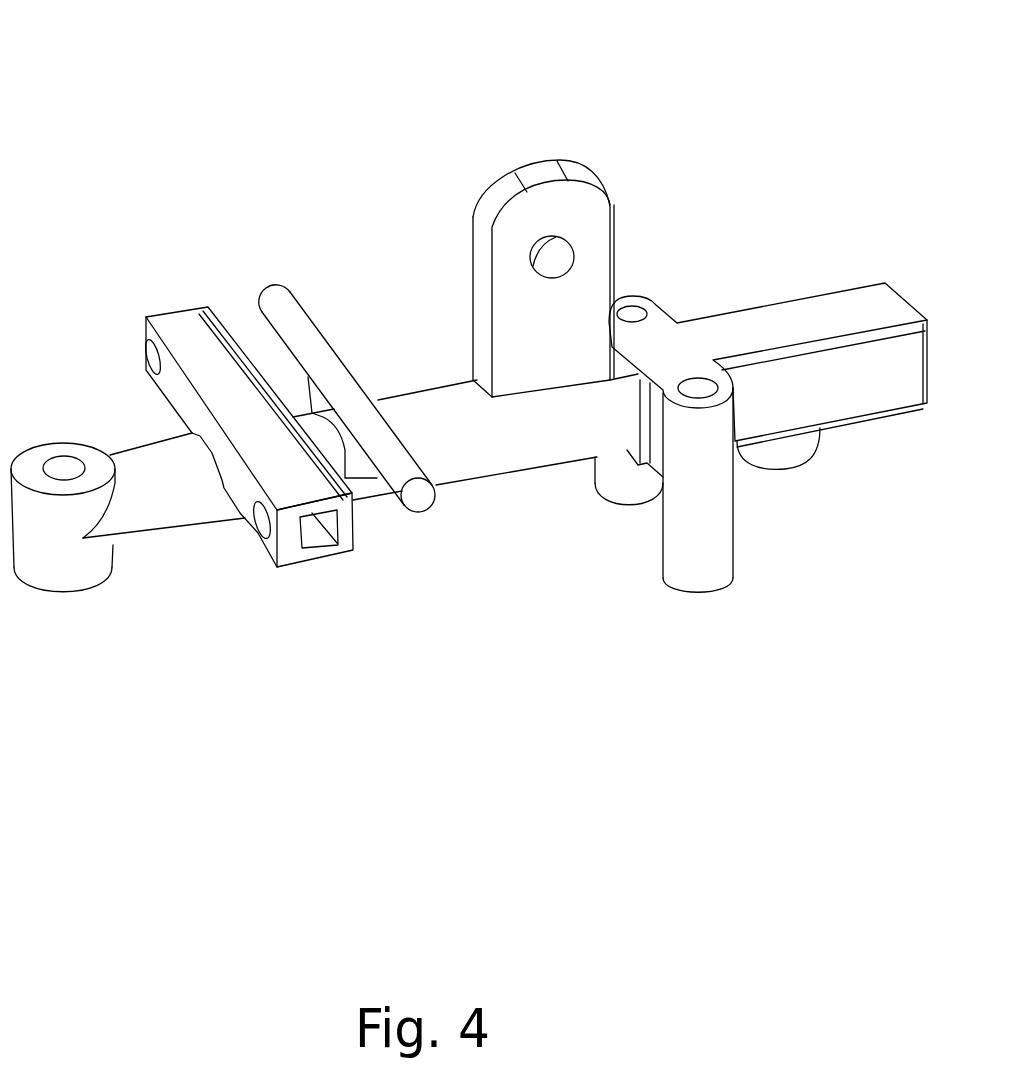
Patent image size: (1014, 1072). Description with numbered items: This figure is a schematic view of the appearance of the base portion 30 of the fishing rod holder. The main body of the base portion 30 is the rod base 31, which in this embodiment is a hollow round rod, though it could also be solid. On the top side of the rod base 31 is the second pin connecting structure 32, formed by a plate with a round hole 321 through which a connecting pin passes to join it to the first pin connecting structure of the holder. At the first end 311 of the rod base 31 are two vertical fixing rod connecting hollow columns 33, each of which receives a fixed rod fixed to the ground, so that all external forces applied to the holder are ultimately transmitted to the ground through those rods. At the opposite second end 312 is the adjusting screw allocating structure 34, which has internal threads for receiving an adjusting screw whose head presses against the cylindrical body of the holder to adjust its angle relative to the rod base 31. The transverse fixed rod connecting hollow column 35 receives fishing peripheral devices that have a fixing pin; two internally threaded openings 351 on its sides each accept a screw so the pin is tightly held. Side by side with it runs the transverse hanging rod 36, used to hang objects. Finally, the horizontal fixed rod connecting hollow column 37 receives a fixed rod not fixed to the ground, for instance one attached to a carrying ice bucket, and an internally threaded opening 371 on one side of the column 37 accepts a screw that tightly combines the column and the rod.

The base portion 30 is at (538, 119).
The rod base 31 is at (527, 460).
The first end 311 is at (617, 380).
The second end 312 is at (125, 540).
The second pin connecting structure 32 is at (577, 213).
The round hole 321 is at (555, 255).
The vertical fixing rod connecting hollow column 33 is at (610, 497).
The adjusting screw allocating structure 34 is at (82, 577).
The transverse fixed rod connecting hollow column 35 is at (190, 313).
The opening 351 is at (153, 360).
The transverse hanging rod 36 is at (285, 308).
The horizontal fixed rod connecting hollow column 37 is at (820, 310).
The opening 371 is at (760, 457).